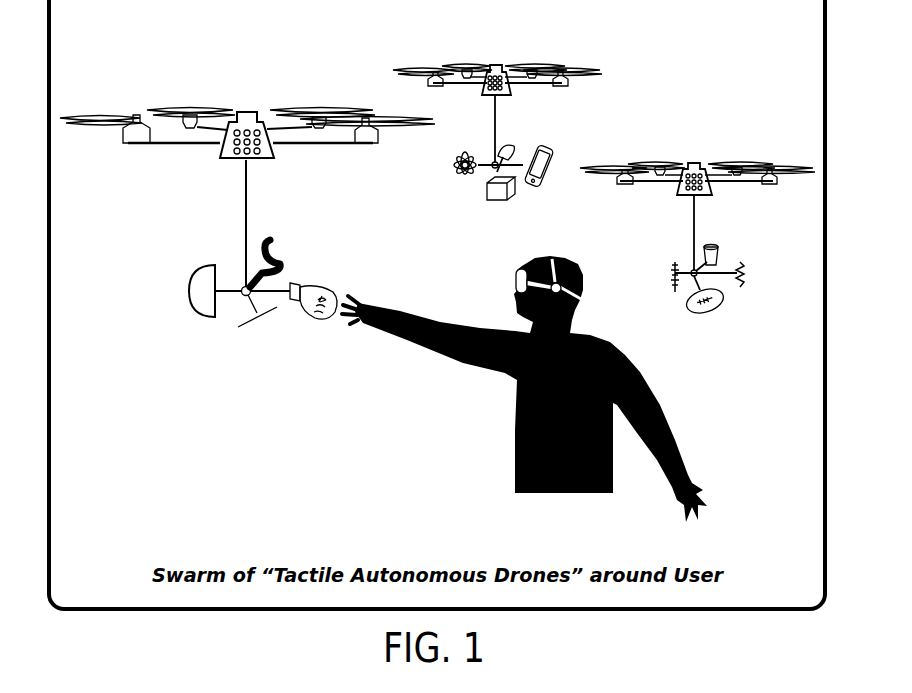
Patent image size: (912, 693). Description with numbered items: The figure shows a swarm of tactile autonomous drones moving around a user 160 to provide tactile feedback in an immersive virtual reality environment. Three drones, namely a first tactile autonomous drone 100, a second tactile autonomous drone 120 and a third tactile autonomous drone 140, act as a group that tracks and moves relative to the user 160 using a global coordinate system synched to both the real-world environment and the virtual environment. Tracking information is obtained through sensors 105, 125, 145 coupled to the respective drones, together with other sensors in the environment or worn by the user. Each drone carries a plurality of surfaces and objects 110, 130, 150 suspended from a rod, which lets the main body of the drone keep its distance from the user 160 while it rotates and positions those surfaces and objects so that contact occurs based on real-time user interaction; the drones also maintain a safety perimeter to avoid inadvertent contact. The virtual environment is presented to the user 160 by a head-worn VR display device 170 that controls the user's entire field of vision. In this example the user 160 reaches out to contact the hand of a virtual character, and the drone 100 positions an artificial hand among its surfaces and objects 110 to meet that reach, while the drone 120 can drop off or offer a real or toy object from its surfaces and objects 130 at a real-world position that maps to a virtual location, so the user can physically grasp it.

The tactile autonomous drone 100 is at (243, 92).
The sensor 105 is at (230, 159).
The surfaces and objects 110 is at (229, 255).
The tactile autonomous drone 120 is at (495, 50).
The sensor 125 is at (507, 98).
The surfaces and objects 130 is at (471, 191).
The tactile autonomous drone 140 is at (694, 140).
The sensor 145 is at (705, 197).
The surfaces and objects 150 is at (678, 250).
The user 160 is at (486, 385).
The head-worn VR display device 170 is at (513, 272).